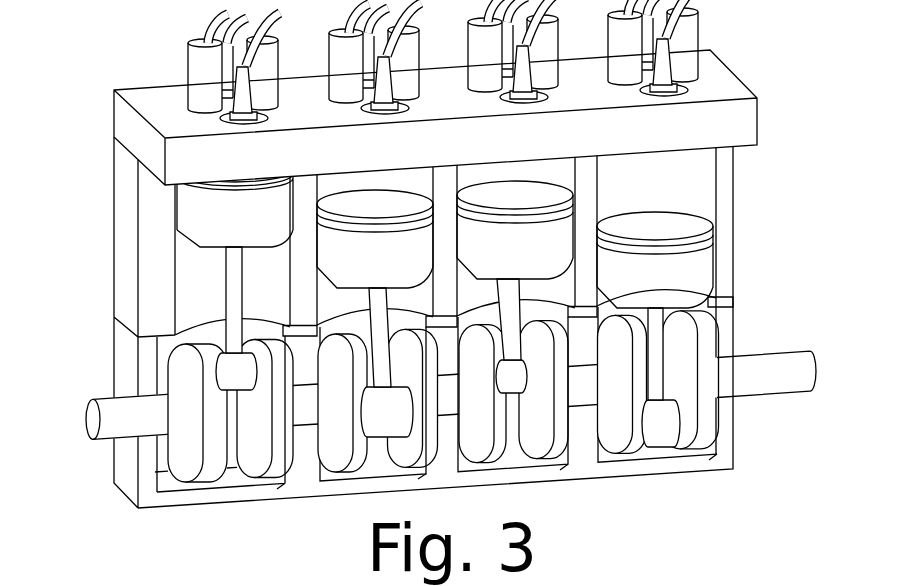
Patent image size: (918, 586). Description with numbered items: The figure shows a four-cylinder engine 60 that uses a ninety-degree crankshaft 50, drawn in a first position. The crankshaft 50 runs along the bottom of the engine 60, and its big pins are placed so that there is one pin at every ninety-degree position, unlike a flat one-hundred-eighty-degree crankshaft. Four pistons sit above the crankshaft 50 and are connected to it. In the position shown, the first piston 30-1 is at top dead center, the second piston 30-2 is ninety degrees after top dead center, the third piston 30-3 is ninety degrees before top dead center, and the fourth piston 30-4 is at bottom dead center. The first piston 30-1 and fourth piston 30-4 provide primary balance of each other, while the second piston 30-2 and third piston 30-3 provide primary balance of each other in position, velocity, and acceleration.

The first piston 30-1 is at (263, 225).
The second piston 30-2 is at (402, 264).
The third piston 30-3 is at (545, 254).
The fourth piston 30-4 is at (687, 287).
The crankshaft 50 is at (770, 368).
The engine 60 is at (99, 533).